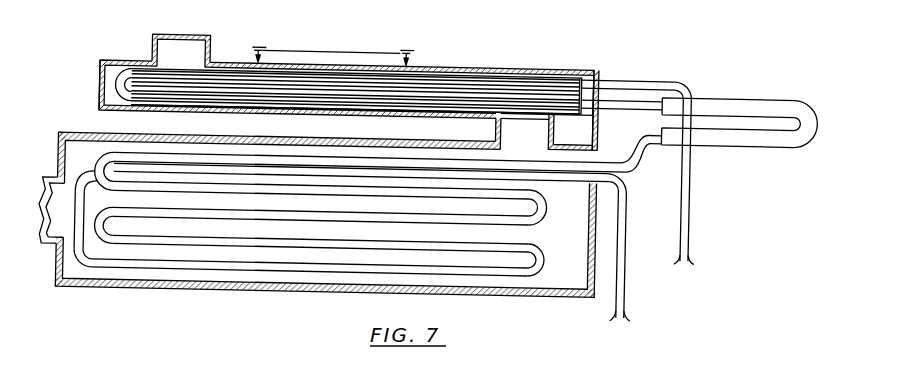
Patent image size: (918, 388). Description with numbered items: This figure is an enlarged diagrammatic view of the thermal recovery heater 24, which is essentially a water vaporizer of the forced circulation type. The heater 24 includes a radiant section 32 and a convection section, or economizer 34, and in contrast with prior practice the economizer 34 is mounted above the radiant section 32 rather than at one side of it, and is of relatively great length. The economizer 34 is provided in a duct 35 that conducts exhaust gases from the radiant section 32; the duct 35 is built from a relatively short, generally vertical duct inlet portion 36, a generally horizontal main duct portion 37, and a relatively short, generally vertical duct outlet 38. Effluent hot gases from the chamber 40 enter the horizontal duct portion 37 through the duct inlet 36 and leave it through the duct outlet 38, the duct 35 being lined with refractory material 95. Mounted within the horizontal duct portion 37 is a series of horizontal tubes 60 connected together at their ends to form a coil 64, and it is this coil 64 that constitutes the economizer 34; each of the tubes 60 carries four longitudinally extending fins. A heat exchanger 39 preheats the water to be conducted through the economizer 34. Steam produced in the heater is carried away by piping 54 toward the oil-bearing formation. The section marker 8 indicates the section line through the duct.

The heater 24 is at (323, 77).
The duct outlet 38 is at (152, 50).
The coil 64 is at (90, 85).
The economizer 34 is at (460, 57).
The refractory material 95 is at (513, 62).
The main duct portion 37 is at (373, 81).
The duct 35 is at (434, 105).
The horizontal tubes 60 is at (249, 101).
The section line 8- 8 is at (333, 48).
The heat exchanger 39 is at (750, 77).
The duct inlet portion 36 is at (557, 117).
The radiant section 32 is at (159, 136).
The chamber 40 is at (577, 264).
The piping 54 is at (632, 285).